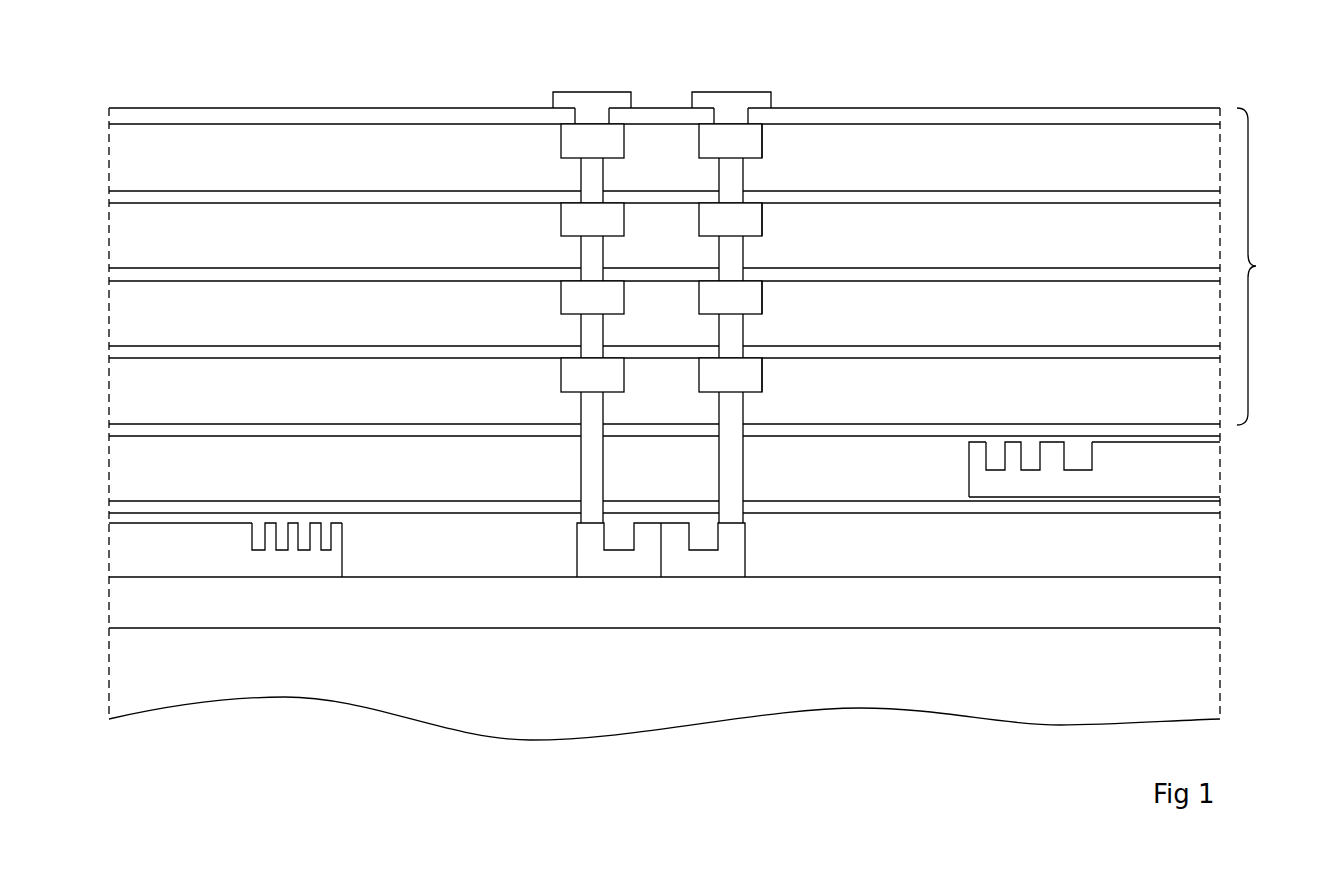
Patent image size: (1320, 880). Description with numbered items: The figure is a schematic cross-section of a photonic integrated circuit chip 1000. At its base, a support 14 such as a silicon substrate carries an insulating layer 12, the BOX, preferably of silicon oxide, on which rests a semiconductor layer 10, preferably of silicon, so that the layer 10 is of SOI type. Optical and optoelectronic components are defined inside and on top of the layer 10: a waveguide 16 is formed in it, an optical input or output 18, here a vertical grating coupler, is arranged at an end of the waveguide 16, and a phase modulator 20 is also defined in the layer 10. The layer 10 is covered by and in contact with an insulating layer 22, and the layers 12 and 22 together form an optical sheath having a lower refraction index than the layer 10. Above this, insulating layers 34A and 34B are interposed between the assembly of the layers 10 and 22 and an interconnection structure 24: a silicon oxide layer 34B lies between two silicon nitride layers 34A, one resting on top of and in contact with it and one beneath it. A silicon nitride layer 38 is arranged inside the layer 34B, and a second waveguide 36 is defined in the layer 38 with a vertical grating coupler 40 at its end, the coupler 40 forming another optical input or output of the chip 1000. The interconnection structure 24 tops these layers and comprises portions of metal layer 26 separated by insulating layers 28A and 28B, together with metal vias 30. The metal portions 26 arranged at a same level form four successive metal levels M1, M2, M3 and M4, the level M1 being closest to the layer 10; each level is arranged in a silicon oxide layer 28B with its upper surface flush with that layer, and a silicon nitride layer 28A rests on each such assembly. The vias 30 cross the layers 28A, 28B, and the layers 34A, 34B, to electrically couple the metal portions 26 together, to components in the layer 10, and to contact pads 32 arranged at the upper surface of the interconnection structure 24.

The chip 1000 is at (243, 53).
The semiconductor layer 10 is at (95, 543).
The insulating layer 12 is at (1228, 601).
The support 14 is at (1228, 677).
The waveguide 16 is at (159, 560).
The optical input and/or output 18 is at (298, 569).
The phase modulator 20 is at (718, 570).
The insulating layer 22 is at (1200, 543).
The interconnection structure 24 is at (1262, 266).
The metal layer portion 26 is at (575, 140).
The insulating layer 28A is at (120, 113).
The insulating layer 28B is at (136, 160).
The metal via 30 is at (592, 182).
The contact pad 32 is at (595, 98).
The insulating layer 34A is at (119, 428).
The insulating layer 34B is at (136, 470).
The waveguide 36 is at (1143, 480).
The layer 38 is at (1139, 504).
The vertical grating coupler 40 is at (1028, 483).
The metal level M1 is at (774, 376).
The metal level M2 is at (774, 298).
The metal level M3 is at (774, 220).
The metal level M4 is at (774, 142).